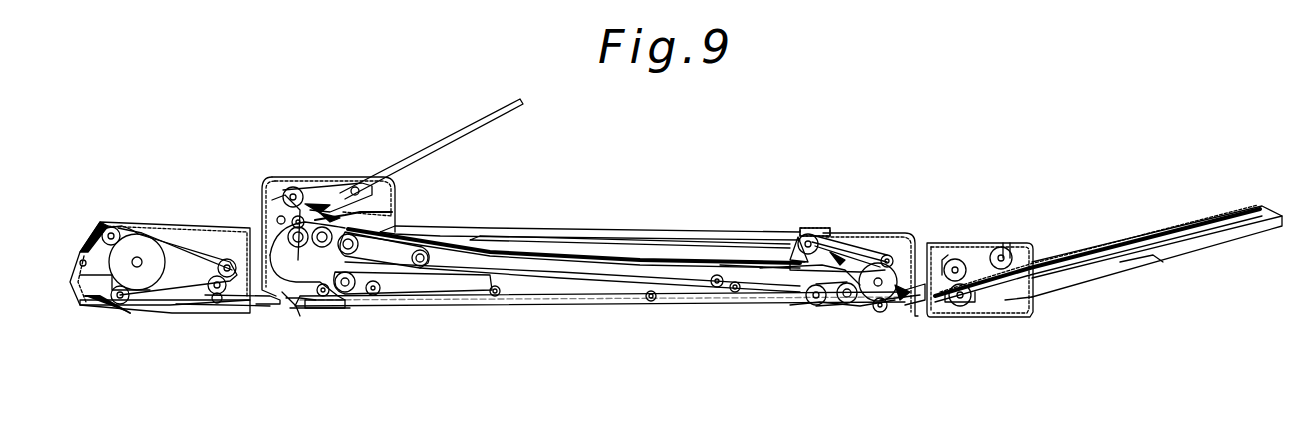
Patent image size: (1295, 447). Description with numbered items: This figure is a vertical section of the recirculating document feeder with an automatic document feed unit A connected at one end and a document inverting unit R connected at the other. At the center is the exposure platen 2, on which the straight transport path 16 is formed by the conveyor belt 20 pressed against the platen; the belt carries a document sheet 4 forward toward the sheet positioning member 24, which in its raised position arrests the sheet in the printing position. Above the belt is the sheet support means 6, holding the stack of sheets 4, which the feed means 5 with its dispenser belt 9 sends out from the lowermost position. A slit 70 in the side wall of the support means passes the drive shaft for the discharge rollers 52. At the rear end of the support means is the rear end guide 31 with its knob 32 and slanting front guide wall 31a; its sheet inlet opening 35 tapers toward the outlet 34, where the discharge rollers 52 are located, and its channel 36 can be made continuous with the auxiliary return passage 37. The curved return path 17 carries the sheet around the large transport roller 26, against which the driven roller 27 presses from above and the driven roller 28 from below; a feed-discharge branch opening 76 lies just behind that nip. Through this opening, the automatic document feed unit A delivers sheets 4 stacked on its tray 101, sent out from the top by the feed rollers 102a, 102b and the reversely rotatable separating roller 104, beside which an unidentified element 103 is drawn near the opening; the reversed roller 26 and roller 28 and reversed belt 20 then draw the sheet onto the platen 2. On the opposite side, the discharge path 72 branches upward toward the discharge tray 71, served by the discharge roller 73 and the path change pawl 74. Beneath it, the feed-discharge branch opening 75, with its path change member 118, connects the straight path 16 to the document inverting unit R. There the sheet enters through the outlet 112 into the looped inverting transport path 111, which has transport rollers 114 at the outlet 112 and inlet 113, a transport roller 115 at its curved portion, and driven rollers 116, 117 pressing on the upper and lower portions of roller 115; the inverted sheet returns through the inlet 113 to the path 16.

The document inverting unit R is at (155, 222).
The driven roller 116 is at (110, 227).
The transport roller 115 is at (155, 277).
The inverting transport path 111 is at (190, 255).
The driven roller 117 is at (124, 305).
The transport rollers 114 is at (210, 298).
The inlet 113 is at (270, 307).
The discharge path 72 is at (266, 210).
The path change pawl 74 is at (272, 200).
The discharge roller 73 is at (308, 192).
The feed means 5 is at (330, 212).
The document sheet discharge tray 71 is at (418, 140).
The outlet 112 is at (272, 266).
The dispenser belt 9 is at (400, 266).
The feed-discharge branch opening 75 is at (320, 305).
The path change member 118 is at (300, 308).
The exposure platen 2 is at (597, 296).
The straight transport path 16 is at (641, 300).
The conveyor belt 20 is at (624, 288).
The document sheets 4 is at (548, 248).
The sheet support means 6 is at (594, 248).
The slit 70 is at (640, 244).
The curved return path 17 is at (920, 262).
The knob 32 is at (806, 228).
The rear end guide 31 is at (818, 215).
The front guide wall 31a is at (798, 238).
The outlet 34 is at (800, 242).
The channel 36 is at (860, 258).
The transport roller 26 is at (866, 262).
The driven roller 27 is at (893, 255).
The discharge rollers 52 is at (810, 305).
The auxiliary return passage 37 is at (790, 280).
The sheet inlet opening 35 is at (825, 308).
The sheet positioning member 24 is at (850, 300).
The driven roller 28 is at (878, 312).
The guide 103 is at (905, 300).
The feed-discharge branch opening 76 is at (914, 302).
The automatic document feed unit A is at (1000, 240).
The feed roller 102b is at (958, 258).
The feed roller 102a is at (1010, 250).
The separating roller 104 is at (962, 307).
The tray 101 is at (1110, 262).